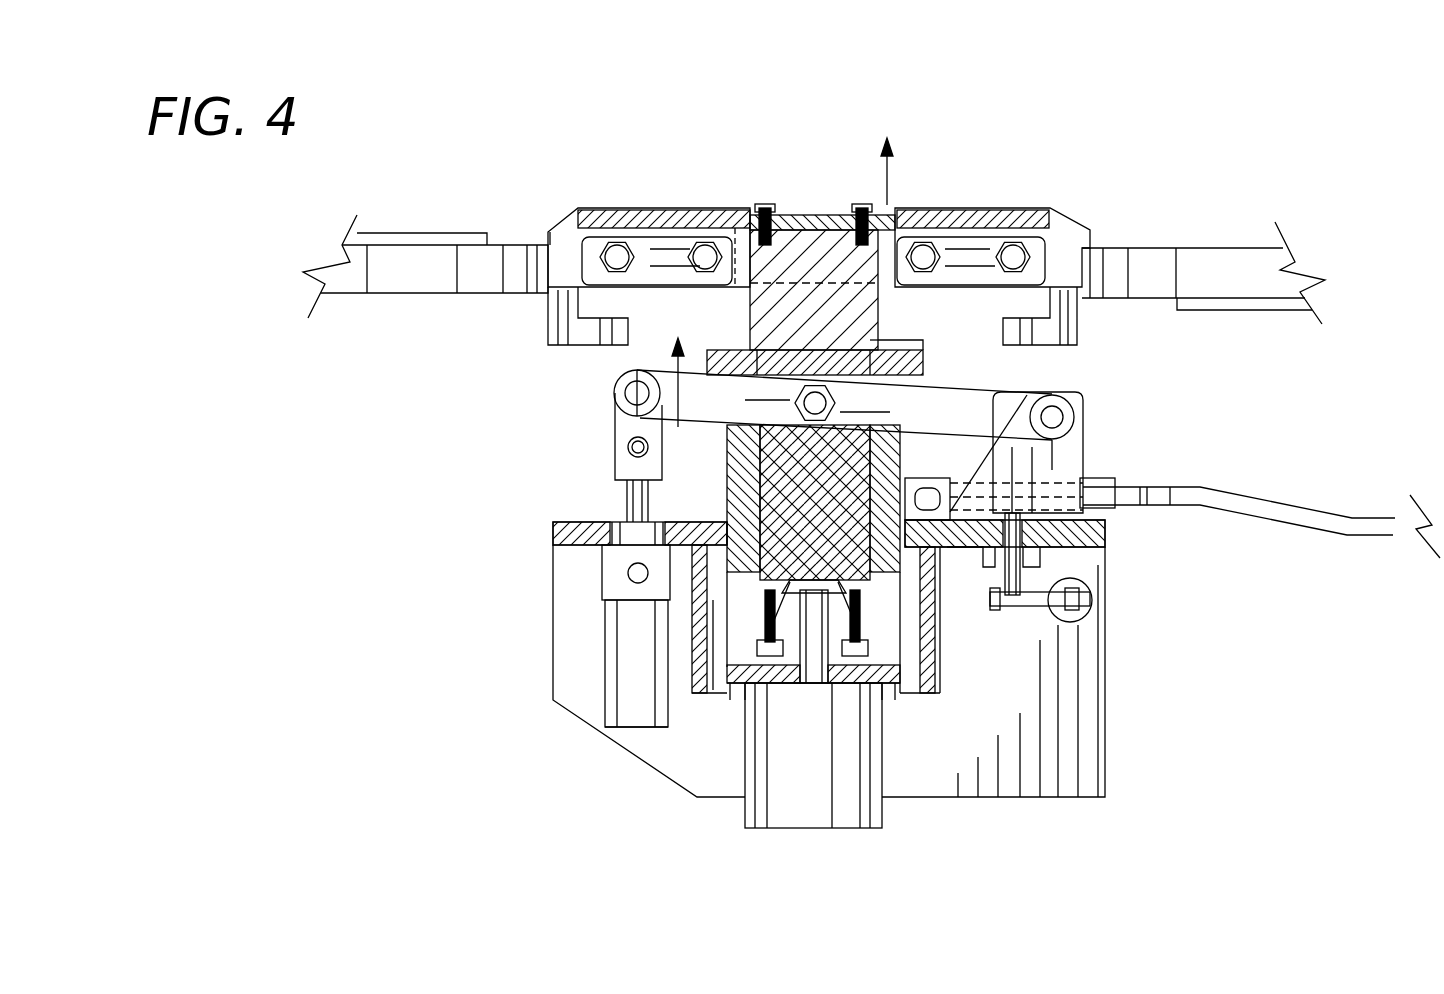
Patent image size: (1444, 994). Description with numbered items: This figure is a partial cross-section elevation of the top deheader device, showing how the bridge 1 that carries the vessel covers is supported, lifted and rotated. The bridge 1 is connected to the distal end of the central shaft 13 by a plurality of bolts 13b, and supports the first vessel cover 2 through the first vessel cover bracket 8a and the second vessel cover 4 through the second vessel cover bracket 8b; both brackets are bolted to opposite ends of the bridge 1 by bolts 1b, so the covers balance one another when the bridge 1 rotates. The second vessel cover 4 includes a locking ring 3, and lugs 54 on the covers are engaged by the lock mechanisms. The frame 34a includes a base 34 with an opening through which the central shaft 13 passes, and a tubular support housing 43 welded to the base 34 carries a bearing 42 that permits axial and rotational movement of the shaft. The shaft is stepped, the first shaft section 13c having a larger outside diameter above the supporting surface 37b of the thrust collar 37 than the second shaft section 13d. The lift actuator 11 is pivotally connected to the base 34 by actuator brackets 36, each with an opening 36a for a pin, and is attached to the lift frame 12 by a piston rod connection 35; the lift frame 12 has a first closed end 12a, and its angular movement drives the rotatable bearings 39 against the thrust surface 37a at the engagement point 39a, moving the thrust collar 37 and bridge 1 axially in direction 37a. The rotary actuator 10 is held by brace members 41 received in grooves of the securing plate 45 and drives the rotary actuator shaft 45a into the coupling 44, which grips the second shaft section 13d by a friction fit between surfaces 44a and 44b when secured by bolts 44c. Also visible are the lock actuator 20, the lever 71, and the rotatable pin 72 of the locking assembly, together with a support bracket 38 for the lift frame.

The bridge 1 is at (955, 223).
The bolts 1b is at (700, 252).
The first vessel cover 2 is at (1268, 248).
The locking ring 3 is at (500, 240).
The second vessel cover 4 is at (383, 238).
The first vessel cover bracket 8a is at (1080, 232).
The second vessel cover bracket 8b is at (573, 212).
The rotary actuator 10 is at (870, 818).
The lift actuator 11 is at (612, 715).
The lift frame 12 is at (928, 405).
The first closed end 12a is at (675, 412).
The central shaft 13 is at (833, 493).
The bolts 13b is at (860, 206).
The first shaft section 13c is at (750, 322).
The second shaft section 13d is at (786, 584).
The lock actuator 20 is at (1107, 642).
The base 34 is at (550, 530).
The frame 34a is at (668, 780).
The piston rod connection 35 is at (612, 462).
The actuator brackets 36 is at (602, 562).
The opening 36a is at (628, 580).
The thrust collar 37 is at (905, 352).
The thrust surface 37a is at (935, 372).
The supporting surface of the thrust collar 37b is at (925, 330).
The support bracket 38 is at (1072, 418).
The rotatable bearings 39 is at (745, 472).
The engagement point 39a is at (877, 330).
The brace members 41 is at (935, 640).
The bearing 42 is at (918, 594).
The tubular support housing 43 is at (692, 600).
The coupling 44 is at (935, 662).
The friction surface 44a is at (768, 590).
The friction surface 44b is at (855, 590).
The bolts 44c is at (850, 686).
The securing plate 45 is at (887, 686).
The rotary actuator shaft 45a is at (737, 718).
The lugs 54 is at (553, 332).
The lever 71 is at (1093, 603).
The rotatable pin 72 is at (1023, 585).